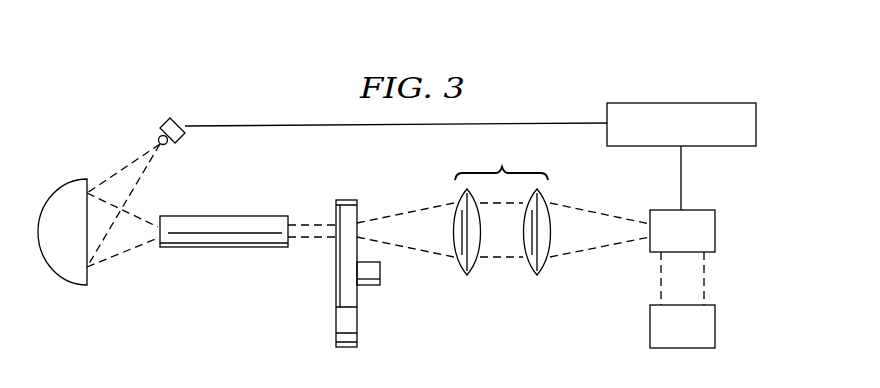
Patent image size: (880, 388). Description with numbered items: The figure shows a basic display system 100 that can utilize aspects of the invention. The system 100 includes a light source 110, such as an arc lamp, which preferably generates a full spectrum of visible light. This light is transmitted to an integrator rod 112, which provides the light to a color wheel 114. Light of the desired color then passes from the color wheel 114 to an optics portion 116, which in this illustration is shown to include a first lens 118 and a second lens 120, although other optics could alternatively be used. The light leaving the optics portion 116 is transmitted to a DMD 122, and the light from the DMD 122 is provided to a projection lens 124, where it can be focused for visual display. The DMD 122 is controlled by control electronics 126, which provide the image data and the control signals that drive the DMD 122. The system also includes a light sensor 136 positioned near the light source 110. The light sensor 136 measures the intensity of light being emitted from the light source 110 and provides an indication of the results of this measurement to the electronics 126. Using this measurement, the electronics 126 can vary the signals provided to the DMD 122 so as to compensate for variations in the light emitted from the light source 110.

The display system 100 is at (247, 82).
The light source 110 is at (65, 189).
The integrator rod 112 is at (218, 247).
The color wheel 114 is at (336, 279).
The optics portion 116 is at (501, 160).
The first lens 118 is at (460, 265).
The second lens 120 is at (548, 262).
The DMD 122 is at (715, 233).
The projection lens 124 is at (715, 325).
The control electronics 126 is at (756, 121).
The light sensor 136 is at (164, 119).